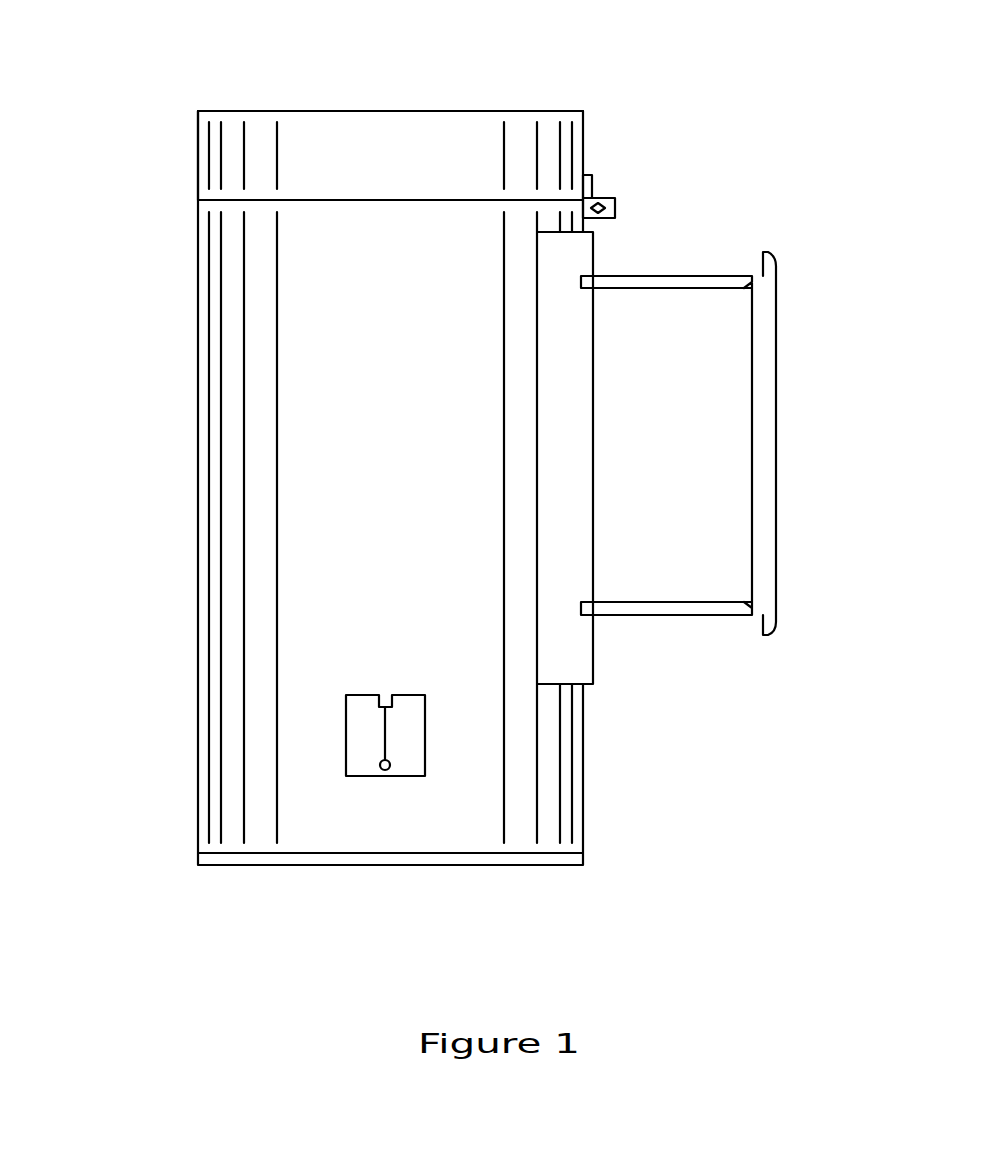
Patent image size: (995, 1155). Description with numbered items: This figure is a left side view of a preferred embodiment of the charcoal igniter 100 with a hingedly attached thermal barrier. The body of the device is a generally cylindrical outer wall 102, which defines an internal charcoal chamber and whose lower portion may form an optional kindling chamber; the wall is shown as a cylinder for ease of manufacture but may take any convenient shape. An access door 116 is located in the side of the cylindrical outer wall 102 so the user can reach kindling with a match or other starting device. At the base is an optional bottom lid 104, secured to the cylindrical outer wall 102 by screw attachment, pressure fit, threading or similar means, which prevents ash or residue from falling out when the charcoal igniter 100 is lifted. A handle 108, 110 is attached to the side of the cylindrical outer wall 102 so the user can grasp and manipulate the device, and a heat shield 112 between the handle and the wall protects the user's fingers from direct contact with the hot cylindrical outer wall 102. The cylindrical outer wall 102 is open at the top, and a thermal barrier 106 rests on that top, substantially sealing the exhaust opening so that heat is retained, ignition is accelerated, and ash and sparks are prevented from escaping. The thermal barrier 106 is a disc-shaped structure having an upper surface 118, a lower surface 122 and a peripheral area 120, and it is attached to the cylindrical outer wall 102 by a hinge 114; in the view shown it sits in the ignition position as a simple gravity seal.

The charcoal igniter 100 is at (802, 137).
The cylindrical outer wall 102 is at (203, 448).
The bottom lid 104 is at (313, 867).
The thermal barrier 106 is at (333, 120).
The handle 108 is at (765, 443).
The handle 110 is at (660, 273).
The heat shield 112 is at (558, 502).
The hinge 114 is at (615, 210).
The access door 116 is at (390, 738).
The upper surface 118 is at (252, 110).
The peripheral area 120 is at (195, 137).
The lower surface 122 is at (447, 202).